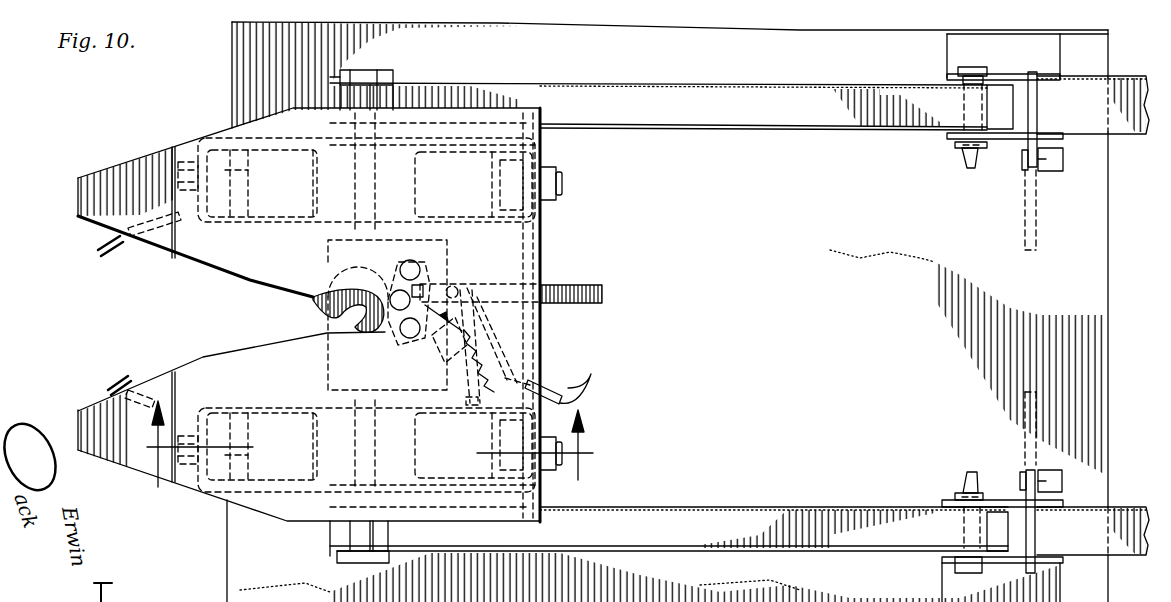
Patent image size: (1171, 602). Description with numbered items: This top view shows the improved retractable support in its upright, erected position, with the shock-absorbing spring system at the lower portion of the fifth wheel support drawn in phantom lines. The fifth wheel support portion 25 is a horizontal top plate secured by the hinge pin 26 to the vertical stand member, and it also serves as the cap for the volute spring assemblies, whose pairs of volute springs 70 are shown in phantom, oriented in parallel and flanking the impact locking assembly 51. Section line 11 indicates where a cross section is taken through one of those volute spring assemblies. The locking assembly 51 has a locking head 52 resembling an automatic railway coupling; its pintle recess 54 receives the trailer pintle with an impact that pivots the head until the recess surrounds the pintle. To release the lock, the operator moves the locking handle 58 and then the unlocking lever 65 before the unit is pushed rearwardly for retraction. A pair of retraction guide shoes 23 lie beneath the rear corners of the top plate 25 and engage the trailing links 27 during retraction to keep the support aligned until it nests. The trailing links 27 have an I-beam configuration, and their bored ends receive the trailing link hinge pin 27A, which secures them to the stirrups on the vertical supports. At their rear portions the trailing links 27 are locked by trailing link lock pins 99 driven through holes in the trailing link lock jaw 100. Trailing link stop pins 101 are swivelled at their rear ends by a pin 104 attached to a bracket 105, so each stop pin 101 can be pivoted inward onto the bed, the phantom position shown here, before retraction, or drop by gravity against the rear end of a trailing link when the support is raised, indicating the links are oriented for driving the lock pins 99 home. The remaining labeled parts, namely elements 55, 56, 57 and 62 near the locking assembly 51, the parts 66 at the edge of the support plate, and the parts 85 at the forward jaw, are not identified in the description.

The retraction guide shoes 23 is at (540, 108).
The trailing link 27 is at (765, 108).
The trailing link hinge pin 27A is at (378, 115).
The trailing link lock jaw 100 is at (1000, 72).
The trailing link lock pins 99 is at (970, 168).
The trailing link stop pins 101 is at (1036, 112).
The bracket 105 is at (1050, 171).
The pin 104 is at (1020, 170).
The bolt 66 is at (565, 155).
The volute springs 70 is at (287, 200).
The hinge pin 26 is at (320, 408).
The pin 85 is at (110, 240).
The locking head 52 is at (313, 296).
The pintle recess 54 is at (343, 292).
The fifth wheel support portion 25 is at (507, 267).
The roller 56 is at (420, 268).
The roller 55 is at (392, 330).
The roller 57 is at (408, 342).
The unlocking lever 65 is at (580, 290).
The rack 62 is at (474, 340).
The impact locking mechanism 51 is at (570, 352).
The locking handle 58 is at (597, 377).
The section line 11 is at (370, 444).